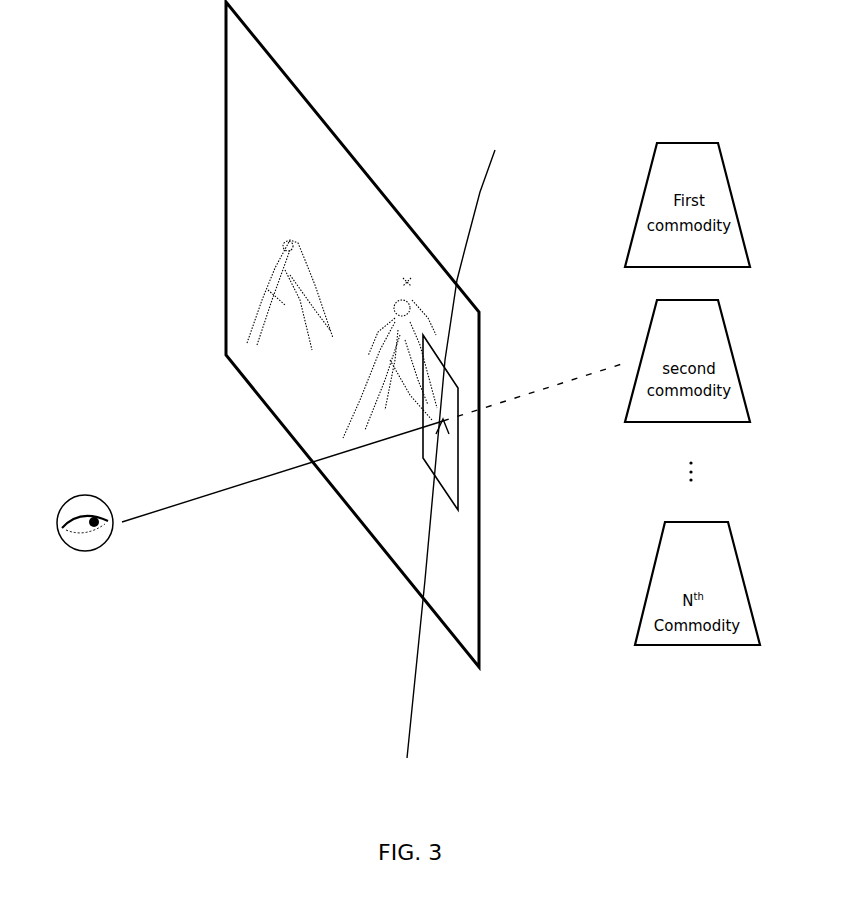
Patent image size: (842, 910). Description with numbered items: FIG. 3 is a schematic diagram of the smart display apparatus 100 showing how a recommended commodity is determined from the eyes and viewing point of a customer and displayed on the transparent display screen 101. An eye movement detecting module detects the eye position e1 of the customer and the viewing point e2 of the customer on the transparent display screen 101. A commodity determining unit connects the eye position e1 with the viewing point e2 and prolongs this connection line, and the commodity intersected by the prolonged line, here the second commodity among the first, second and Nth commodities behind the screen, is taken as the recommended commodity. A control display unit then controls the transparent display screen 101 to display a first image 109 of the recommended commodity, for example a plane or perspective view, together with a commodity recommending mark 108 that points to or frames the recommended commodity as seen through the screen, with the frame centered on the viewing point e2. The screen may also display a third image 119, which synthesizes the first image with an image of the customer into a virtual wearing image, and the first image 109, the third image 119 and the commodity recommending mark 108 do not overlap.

The smart display apparatus 100 is at (517, 905).
The transparent display screen 101 is at (280, 114).
The commodity recommending mark 108 is at (481, 442).
The first image 109 is at (265, 293).
The third image 119 is at (367, 416).
The eye position e1 is at (87, 577).
The viewing point e2 is at (409, 806).